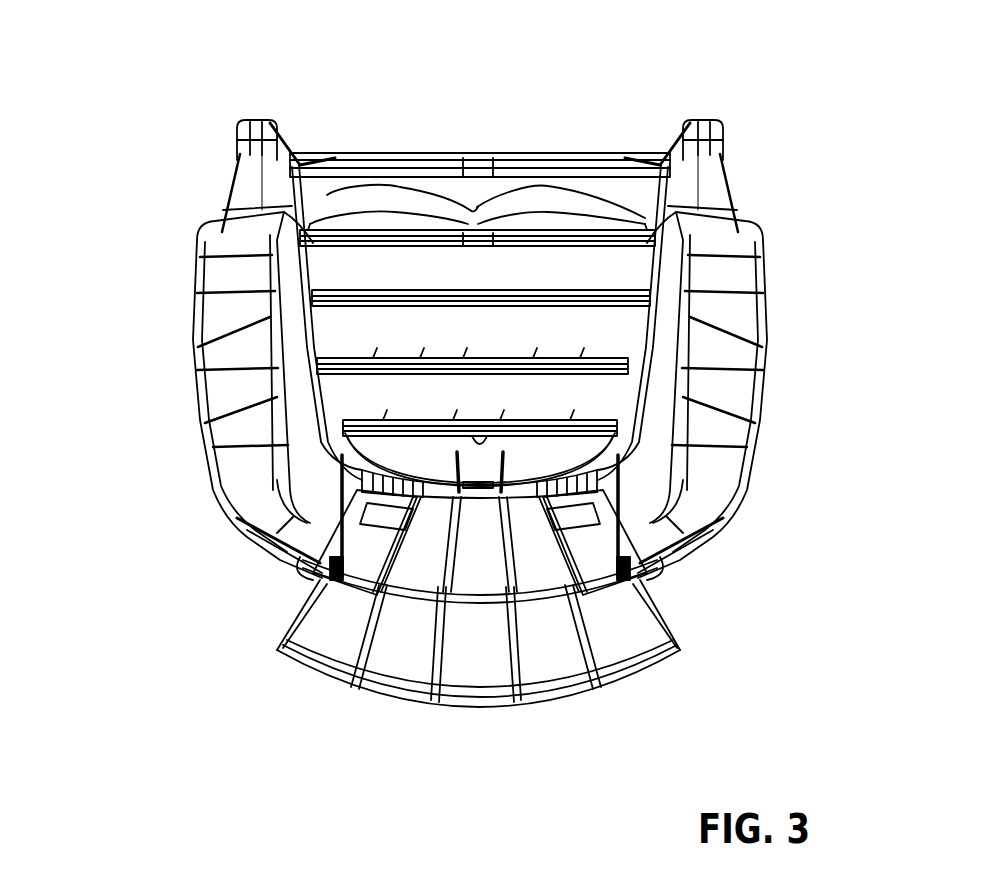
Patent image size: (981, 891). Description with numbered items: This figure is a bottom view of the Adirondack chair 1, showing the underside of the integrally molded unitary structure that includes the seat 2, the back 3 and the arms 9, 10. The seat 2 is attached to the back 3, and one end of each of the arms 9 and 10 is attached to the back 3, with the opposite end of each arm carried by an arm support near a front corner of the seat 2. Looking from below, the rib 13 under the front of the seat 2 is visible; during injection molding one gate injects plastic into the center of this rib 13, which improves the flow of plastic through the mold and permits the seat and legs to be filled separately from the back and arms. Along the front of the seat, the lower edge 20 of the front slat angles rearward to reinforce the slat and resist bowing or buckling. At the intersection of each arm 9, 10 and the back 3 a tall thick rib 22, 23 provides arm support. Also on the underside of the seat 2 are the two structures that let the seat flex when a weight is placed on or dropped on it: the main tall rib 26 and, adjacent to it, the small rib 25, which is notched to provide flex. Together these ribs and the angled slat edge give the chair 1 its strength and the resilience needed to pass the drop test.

The Adirondack chair 1 is at (124, 107).
The seat 2 is at (330, 185).
The back 3 is at (468, 710).
The arm 9 is at (192, 326).
The arm 10 is at (772, 282).
The rib 13 is at (468, 232).
The lower edge 20 is at (593, 158).
The tall thick rib 22 is at (710, 545).
The tall thick rib 23 is at (237, 547).
The small rib 25 is at (613, 467).
The main tall rib 26 is at (585, 432).